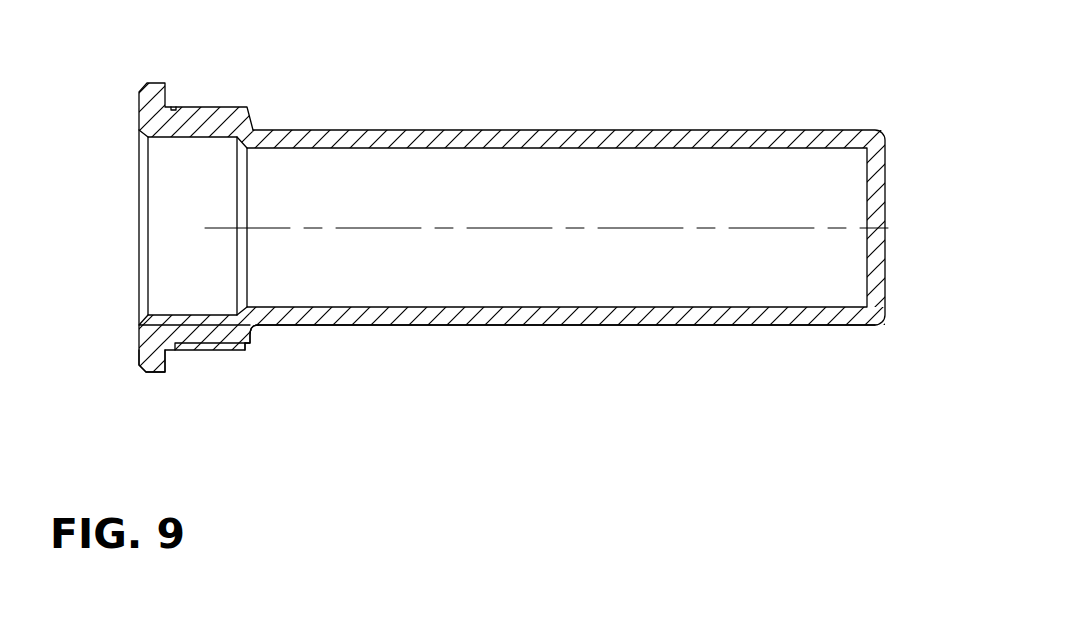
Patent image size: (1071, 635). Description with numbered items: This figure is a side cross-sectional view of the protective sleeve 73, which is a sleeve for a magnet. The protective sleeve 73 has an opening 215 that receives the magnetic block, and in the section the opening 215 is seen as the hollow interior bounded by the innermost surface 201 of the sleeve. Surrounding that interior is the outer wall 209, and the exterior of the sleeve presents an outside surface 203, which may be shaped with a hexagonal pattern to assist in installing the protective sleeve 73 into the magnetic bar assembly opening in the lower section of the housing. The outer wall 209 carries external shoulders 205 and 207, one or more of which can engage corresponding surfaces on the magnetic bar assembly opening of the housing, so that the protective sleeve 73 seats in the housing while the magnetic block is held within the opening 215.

The protective sleeve 73 is at (487, 235).
The innermost surface 201 is at (573, 226).
The outside surface 203 is at (203, 261).
The external shoulder 205 is at (167, 362).
The external shoulder 207 is at (253, 332).
The outer wall 209 is at (510, 325).
The opening 215 is at (193, 268).